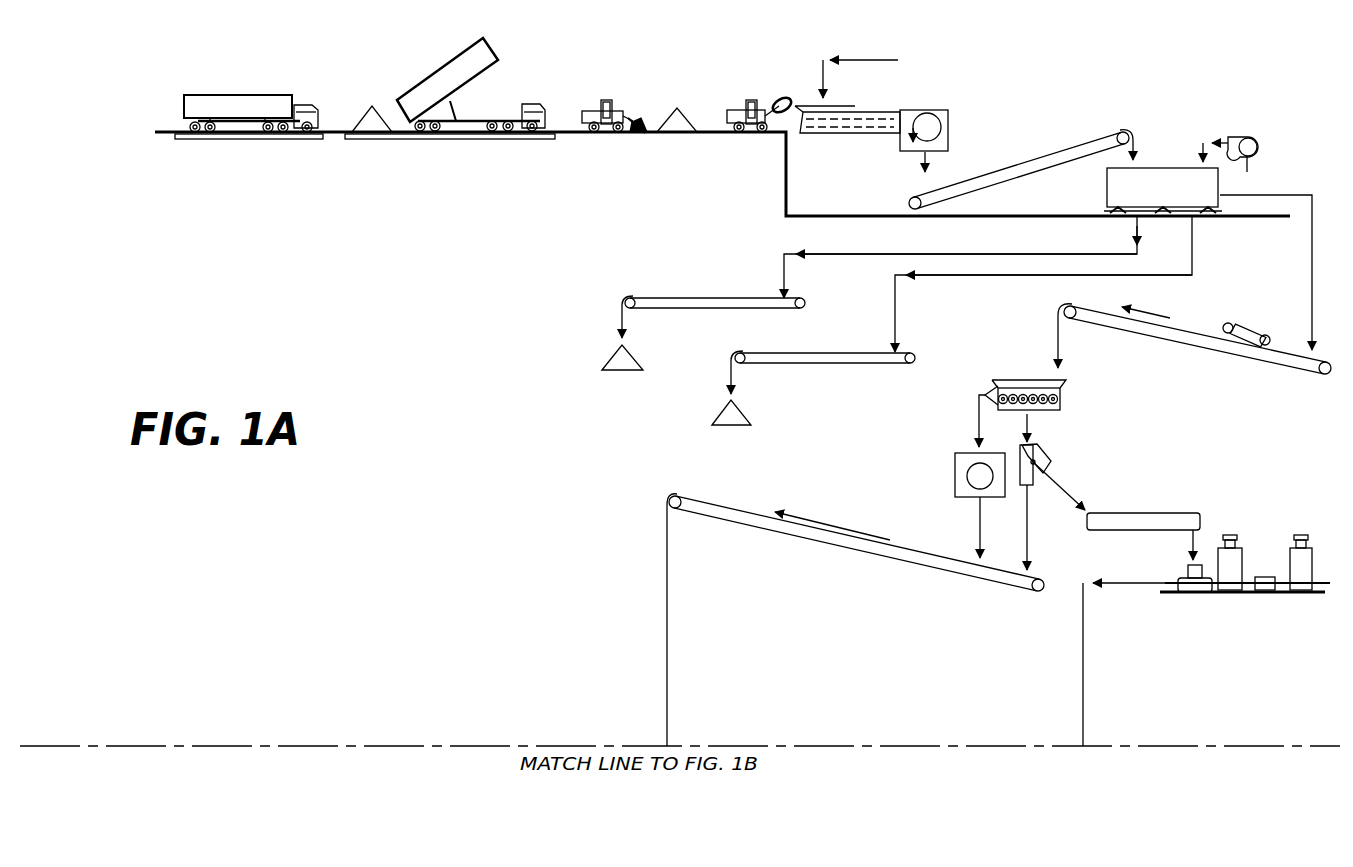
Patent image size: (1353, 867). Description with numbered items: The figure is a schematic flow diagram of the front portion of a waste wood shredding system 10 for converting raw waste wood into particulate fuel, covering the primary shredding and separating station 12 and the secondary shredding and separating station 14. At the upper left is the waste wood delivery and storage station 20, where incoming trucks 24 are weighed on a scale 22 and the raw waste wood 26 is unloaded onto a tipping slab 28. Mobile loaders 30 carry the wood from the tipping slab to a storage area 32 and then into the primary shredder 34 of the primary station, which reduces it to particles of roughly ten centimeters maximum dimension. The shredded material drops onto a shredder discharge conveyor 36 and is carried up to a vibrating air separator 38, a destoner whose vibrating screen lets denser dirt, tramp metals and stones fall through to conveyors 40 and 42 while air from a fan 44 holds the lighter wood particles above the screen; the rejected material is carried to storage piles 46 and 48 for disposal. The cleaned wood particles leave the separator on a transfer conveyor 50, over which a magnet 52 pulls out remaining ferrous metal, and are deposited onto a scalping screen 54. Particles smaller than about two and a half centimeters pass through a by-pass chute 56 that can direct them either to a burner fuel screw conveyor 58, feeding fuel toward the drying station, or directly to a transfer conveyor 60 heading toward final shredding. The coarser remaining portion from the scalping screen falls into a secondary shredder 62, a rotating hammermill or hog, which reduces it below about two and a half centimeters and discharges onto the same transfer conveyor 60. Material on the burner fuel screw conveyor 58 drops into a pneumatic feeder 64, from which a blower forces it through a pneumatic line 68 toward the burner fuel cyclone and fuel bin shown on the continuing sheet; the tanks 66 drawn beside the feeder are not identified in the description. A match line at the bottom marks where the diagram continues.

The waste wood shredding system 10 is at (497, 474).
The primary shredding and separating station 12 is at (1305, 150).
The secondary shredding and separating station 14 is at (925, 482).
The waste wood delivery and storage station 20 is at (386, 180).
The scale 22 is at (232, 140).
The trucks 24 is at (240, 95).
The raw waste wood 26 is at (375, 108).
The tipping slab 28 is at (440, 140).
The mobile loaders 30 is at (606, 100).
The storage area 32 is at (645, 138).
The primary shredder 34 is at (940, 110).
The shredder discharge conveyor 36 is at (1018, 165).
The vibrating air separator 38 is at (1167, 167).
The conveyor 40 is at (737, 298).
The conveyor 42 is at (872, 356).
The fan 44 is at (1251, 136).
The storage pile 46 is at (637, 362).
The storage pile 48 is at (748, 418).
The transfer conveyor 50 is at (1185, 345).
The magnet 52 is at (1230, 325).
The scalping screen 54 is at (1063, 398).
The by-pass chute 56 is at (1050, 458).
The burner fuel screw conveyor 58 is at (1160, 512).
The transfer conveyor 60 is at (855, 545).
The secondary shredder 62 is at (955, 462).
The pneumatic feeder 64 is at (1193, 592).
The additive tank 66 is at (1262, 576).
The pneumatic line 68 is at (1083, 665).